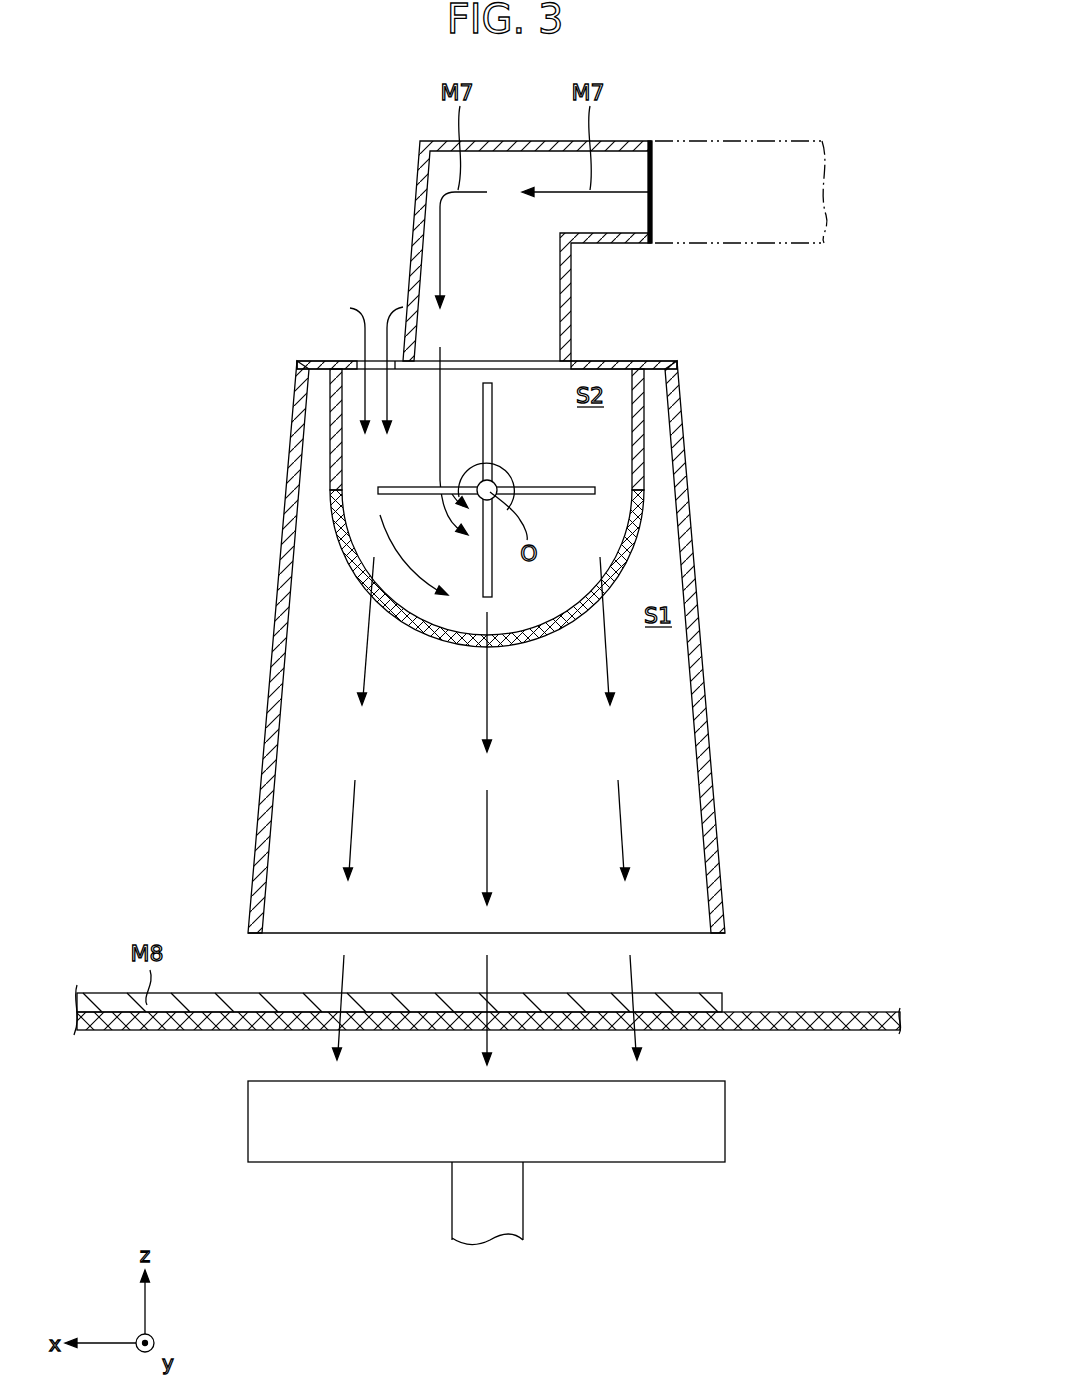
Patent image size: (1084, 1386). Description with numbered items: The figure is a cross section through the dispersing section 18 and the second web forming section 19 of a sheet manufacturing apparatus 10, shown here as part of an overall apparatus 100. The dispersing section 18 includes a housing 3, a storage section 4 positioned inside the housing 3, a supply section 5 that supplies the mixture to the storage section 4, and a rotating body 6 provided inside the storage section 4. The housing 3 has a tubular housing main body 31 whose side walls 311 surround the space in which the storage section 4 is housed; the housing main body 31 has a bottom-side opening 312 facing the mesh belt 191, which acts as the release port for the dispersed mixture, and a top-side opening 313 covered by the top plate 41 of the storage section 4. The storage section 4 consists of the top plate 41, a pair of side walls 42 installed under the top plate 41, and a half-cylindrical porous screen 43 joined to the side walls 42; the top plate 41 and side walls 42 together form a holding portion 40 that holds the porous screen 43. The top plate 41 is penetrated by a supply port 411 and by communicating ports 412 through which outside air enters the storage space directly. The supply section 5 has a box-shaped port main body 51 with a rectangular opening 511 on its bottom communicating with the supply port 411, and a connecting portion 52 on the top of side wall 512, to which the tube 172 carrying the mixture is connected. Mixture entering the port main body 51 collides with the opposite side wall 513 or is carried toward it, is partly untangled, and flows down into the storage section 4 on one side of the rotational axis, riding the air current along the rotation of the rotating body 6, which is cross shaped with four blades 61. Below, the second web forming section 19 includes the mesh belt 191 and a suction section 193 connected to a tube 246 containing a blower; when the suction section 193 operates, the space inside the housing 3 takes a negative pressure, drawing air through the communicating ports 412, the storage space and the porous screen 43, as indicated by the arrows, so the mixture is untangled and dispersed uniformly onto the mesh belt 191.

The housing 3 is at (516, 614).
The storage section 4 is at (510, 462).
The supply section 5 is at (485, 210).
The rotating body 6 is at (491, 490).
The sheet manufacturing apparatus 10 is at (170, 188).
The dispersing section 18 is at (272, 66).
The second web forming section 19 is at (795, 1228).
The housing main body 31 is at (700, 458).
The holding portion 40 is at (660, 480).
The top plate 41 is at (645, 355).
The side walls 42 is at (330, 405).
The porous screen 43 is at (333, 497).
The port main body 51 is at (413, 167).
The connecting portion 52 is at (628, 140).
The blades 61 is at (388, 478).
The fiber body forming apparatus 100 is at (905, 243).
The tube 172 is at (765, 140).
The mesh belt 191 is at (140, 1027).
The suction section 193 is at (727, 1116).
The tube 246 is at (525, 1203).
The side walls 311 is at (276, 665).
The bottom-side opening 312 is at (720, 935).
The top-side opening 313 is at (672, 358).
The supply port 411 is at (541, 353).
The communicating ports 412 is at (378, 363).
The opening 511 is at (430, 352).
The side wall 512 is at (572, 318).
The side wall 513 is at (412, 197).